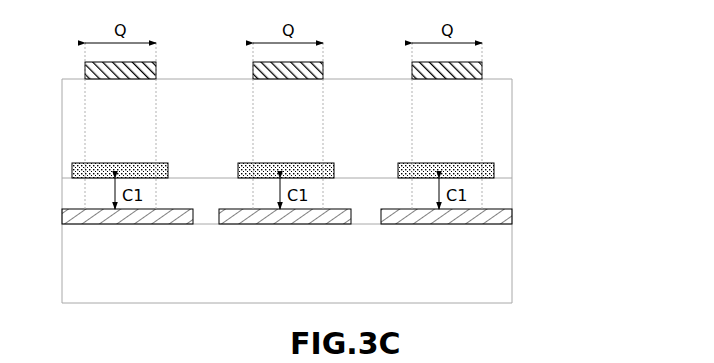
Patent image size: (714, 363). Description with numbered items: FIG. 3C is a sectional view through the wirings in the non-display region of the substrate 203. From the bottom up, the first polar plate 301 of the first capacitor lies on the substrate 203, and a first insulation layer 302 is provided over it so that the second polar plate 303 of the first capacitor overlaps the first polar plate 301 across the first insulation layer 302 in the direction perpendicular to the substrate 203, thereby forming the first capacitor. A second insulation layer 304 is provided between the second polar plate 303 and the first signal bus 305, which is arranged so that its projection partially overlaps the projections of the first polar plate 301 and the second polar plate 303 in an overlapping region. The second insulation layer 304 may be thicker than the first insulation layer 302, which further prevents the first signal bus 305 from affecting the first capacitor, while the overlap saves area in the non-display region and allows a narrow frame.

The substrate 203 is at (480, 295).
The first polar plate of the first capacitor 301 is at (497, 210).
The first insulation layer 302 is at (486, 198).
The second polar plate of the first capacitor 303 is at (493, 165).
The second insulation layer 304 is at (487, 128).
The first signal bus 305 is at (463, 60).